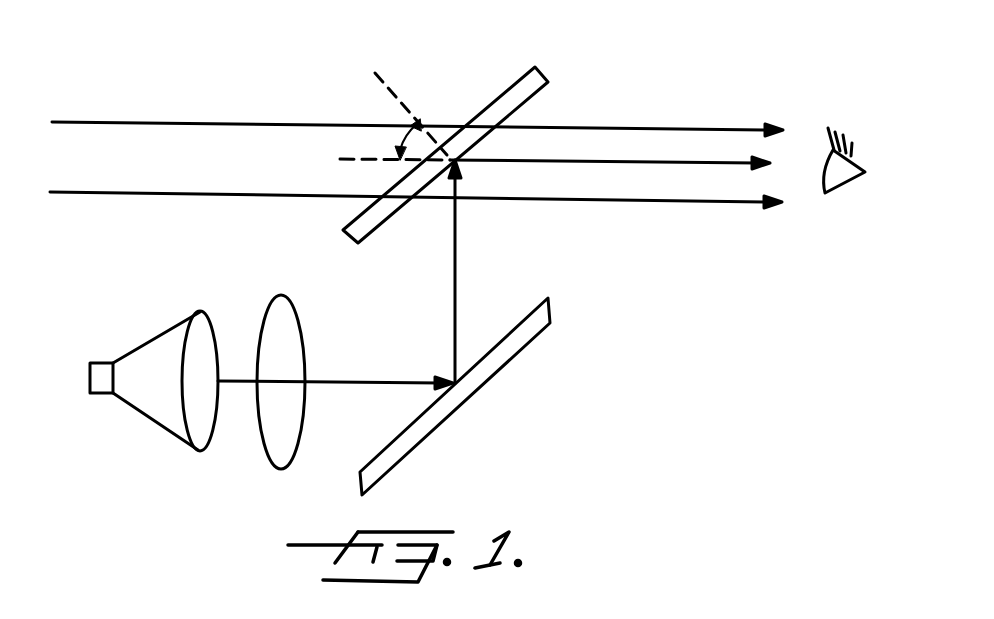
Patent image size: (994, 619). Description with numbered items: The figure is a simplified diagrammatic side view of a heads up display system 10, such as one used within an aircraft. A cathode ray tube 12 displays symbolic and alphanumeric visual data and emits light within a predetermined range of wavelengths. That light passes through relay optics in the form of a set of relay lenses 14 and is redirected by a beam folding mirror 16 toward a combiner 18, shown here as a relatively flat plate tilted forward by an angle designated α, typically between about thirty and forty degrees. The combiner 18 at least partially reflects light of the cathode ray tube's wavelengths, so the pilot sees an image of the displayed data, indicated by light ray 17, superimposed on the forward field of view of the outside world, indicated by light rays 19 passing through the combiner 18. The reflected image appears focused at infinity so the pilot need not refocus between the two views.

The heads up display system 10 is at (703, 321).
The cathode ray tube 12 is at (155, 425).
The relay lenses 14 is at (302, 328).
The beam folding mirror 16 is at (523, 345).
The light ray 17 is at (690, 163).
The combiner 18 is at (510, 90).
The light rays 19 is at (225, 122).